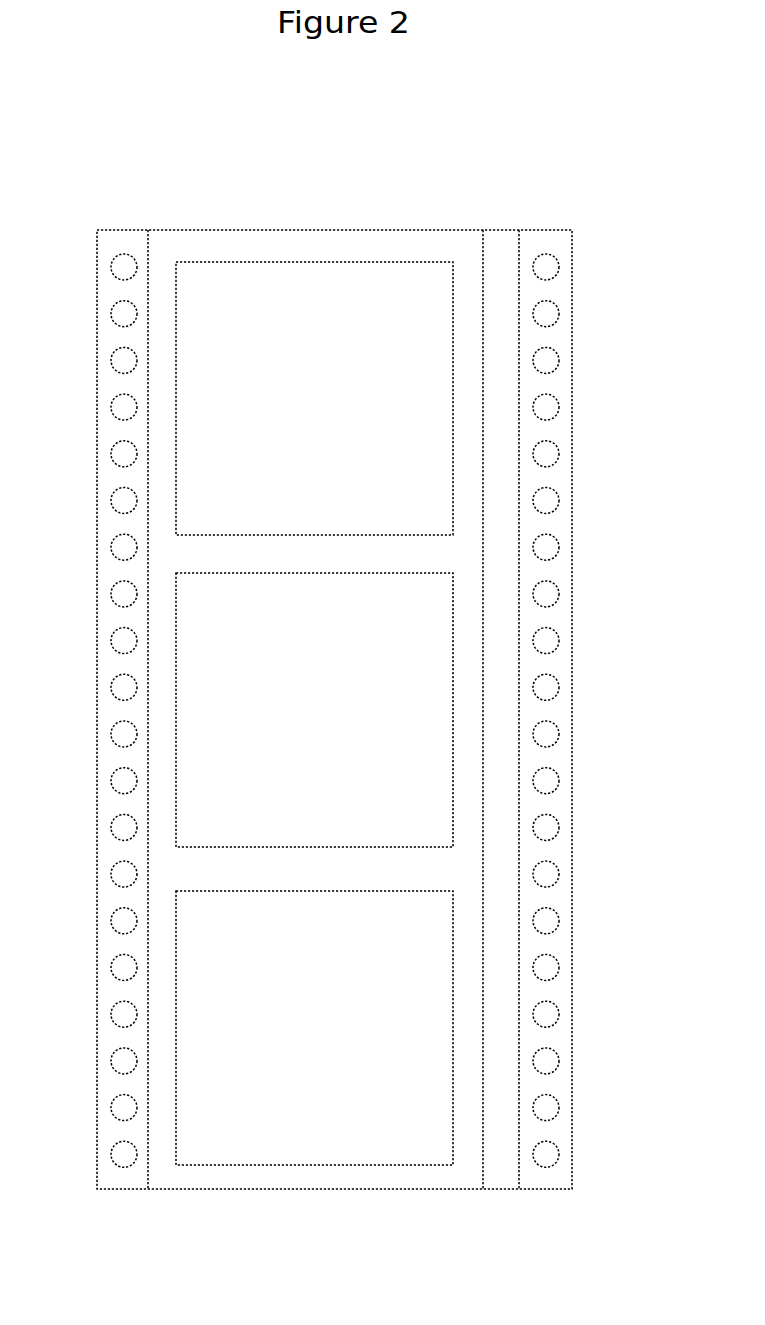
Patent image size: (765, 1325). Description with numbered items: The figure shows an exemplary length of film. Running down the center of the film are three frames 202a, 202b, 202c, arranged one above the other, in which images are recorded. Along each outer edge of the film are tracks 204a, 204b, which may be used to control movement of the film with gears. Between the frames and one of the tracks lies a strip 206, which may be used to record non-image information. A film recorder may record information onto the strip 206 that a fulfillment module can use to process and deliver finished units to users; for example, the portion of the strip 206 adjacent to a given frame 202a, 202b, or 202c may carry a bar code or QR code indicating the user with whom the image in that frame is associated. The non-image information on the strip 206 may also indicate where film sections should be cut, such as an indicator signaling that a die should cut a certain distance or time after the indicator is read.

The frame 202a is at (314, 398).
The frame 202b is at (314, 710).
The frame 202c is at (314, 1028).
The track 204a is at (112, 243).
The track 204b is at (533, 240).
The strip 206 is at (500, 257).